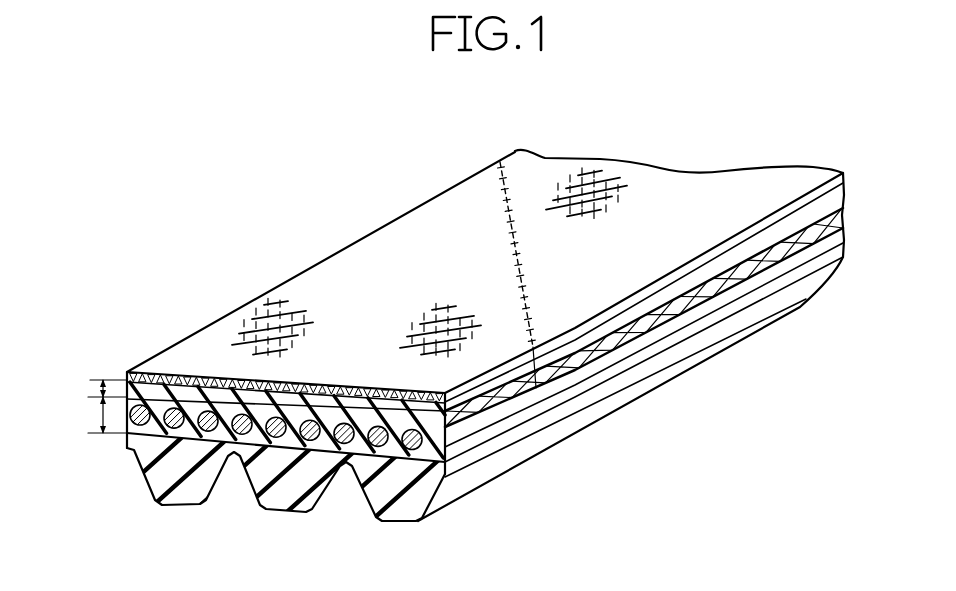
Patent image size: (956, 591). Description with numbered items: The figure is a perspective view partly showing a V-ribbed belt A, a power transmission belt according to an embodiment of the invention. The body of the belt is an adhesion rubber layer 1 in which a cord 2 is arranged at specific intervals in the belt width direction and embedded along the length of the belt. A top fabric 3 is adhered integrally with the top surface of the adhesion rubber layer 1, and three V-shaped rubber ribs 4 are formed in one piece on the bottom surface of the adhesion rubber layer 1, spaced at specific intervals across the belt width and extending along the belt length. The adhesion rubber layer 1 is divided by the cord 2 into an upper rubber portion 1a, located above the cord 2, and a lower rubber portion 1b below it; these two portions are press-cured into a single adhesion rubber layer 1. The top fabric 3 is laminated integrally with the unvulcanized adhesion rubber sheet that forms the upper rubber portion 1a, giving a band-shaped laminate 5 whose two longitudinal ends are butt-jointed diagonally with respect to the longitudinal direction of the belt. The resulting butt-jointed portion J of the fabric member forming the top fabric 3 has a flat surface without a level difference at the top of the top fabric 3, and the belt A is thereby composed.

The V-ribbed belt A is at (367, 168).
The adhesion rubber layer 1 is at (478, 438).
The upper rubber portion 1a is at (90, 379).
The lower rubber portion 1b is at (100, 415).
The cord 2 is at (177, 377).
The top fabric 3 is at (318, 278).
The V-shaped rubber ribs 4 is at (186, 500).
The band-shaped laminate 5 is at (503, 400).
The butt-jointed portion J is at (513, 248).